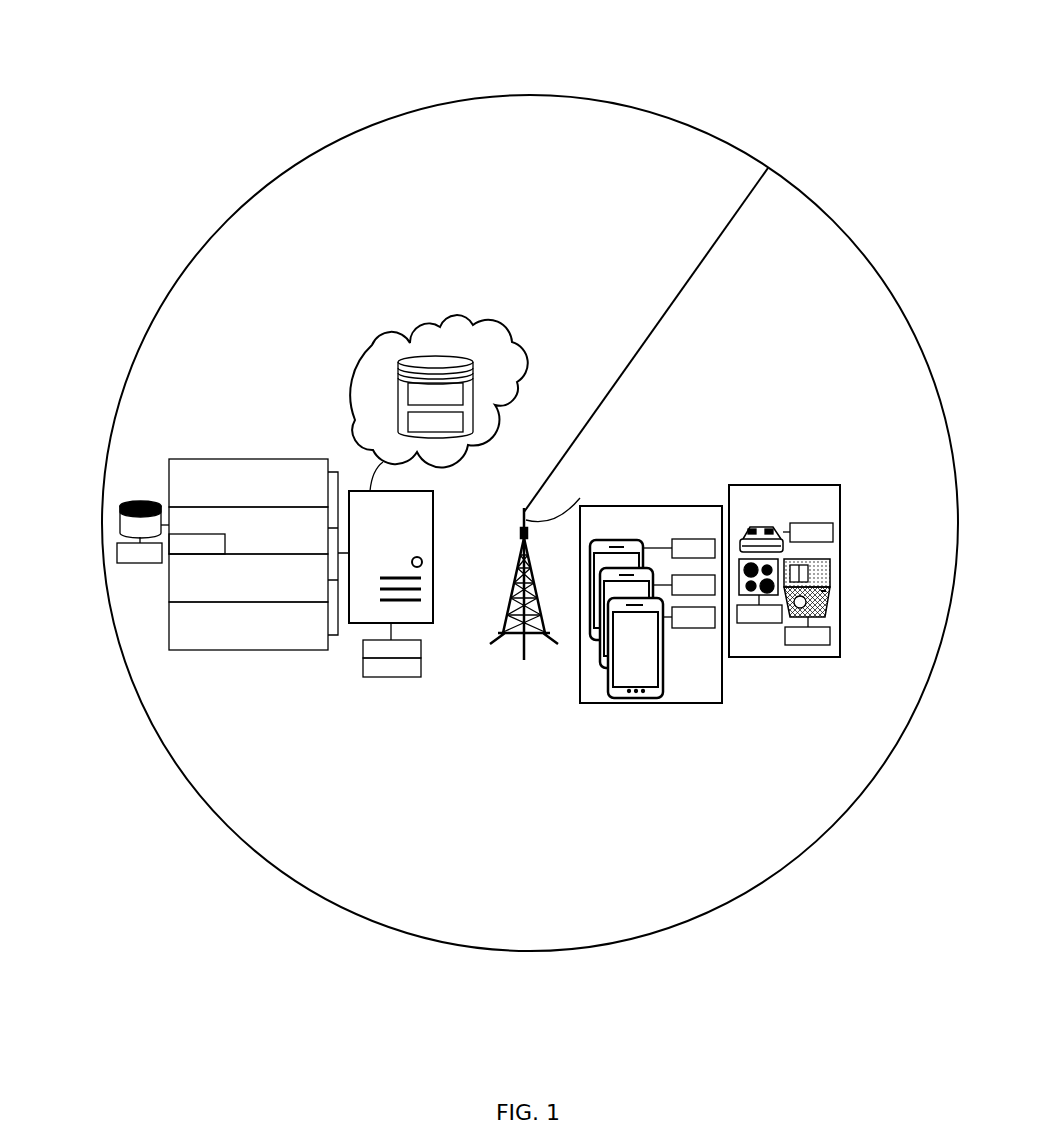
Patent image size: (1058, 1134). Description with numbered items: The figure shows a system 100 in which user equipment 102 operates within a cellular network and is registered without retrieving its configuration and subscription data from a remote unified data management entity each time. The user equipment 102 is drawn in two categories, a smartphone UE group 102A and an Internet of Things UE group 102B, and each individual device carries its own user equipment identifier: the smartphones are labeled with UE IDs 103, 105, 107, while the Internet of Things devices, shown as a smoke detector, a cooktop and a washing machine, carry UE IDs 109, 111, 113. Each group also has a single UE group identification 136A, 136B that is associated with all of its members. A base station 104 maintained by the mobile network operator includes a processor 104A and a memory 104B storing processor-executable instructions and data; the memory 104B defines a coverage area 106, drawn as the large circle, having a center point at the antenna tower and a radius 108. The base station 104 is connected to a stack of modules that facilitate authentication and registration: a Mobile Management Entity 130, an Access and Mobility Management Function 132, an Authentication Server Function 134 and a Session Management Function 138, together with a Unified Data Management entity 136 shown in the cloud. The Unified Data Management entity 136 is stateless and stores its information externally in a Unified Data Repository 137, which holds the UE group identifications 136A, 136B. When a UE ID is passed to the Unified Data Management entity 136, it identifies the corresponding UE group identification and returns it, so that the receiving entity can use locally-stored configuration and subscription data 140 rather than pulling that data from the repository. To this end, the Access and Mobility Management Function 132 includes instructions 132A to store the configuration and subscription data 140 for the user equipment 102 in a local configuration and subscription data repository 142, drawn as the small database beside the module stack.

The system 100 is at (514, 27).
The user equipment 102 is at (667, 488).
The smartphone UE group 102A is at (651, 604).
The Internet of Things UE group 102B is at (784, 571).
The user equipment identifier 103 is at (652, 589).
The base station 104 is at (391, 565).
The processor 104A is at (392, 649).
The memory 104B is at (392, 667).
The user equipment identifier 105 is at (657, 618).
The coverage area 106 is at (100, 543).
The user equipment identifier 107 is at (661, 648).
The radius 108 is at (652, 336).
The user equipment identifier 109 is at (786, 537).
The user equipment identifier 111 is at (759, 591).
The user equipment identifier 113 is at (807, 602).
The Mobile Management Entity 130 is at (248, 483).
The Access and Mobility Management Function 132 is at (248, 530).
The instructions 132A is at (197, 544).
The Authentication Server Function 134 is at (248, 578).
The Unified Data Management entity 136 is at (370, 362).
The UE group identification 136A is at (435, 394).
The UE group identification 136B is at (435, 422).
The Unified Data Repository 137 is at (452, 358).
The Session Management Function 138 is at (248, 626).
The configuration and subscription data 140 is at (139, 550).
The local configuration and subscription data repository 142 is at (144, 519).